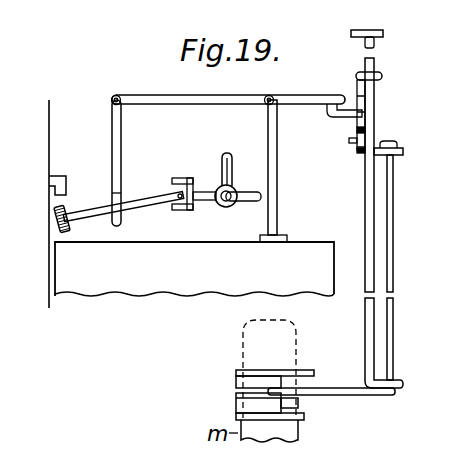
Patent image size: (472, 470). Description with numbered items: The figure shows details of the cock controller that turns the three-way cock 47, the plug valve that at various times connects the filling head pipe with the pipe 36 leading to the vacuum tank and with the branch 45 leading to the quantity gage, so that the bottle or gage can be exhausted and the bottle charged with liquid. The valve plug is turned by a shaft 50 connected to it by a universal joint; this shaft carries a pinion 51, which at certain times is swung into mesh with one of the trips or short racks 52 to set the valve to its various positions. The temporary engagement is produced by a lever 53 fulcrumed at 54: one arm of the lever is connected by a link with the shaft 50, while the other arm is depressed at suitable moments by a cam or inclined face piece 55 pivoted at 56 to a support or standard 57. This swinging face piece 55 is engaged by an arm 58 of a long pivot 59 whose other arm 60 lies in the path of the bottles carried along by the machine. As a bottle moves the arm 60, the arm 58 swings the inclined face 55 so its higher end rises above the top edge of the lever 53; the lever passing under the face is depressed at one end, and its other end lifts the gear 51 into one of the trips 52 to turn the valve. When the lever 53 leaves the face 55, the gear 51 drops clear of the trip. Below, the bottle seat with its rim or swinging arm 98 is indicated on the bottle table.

The pipe 36 is at (242, 164).
The branch 45 is at (248, 203).
The three-way cock 47 is at (208, 203).
The shaft 50 is at (93, 211).
The pinion 51 is at (57, 222).
The trip 52 is at (67, 181).
The lever 53 is at (229, 168).
The fulcrum 54 is at (272, 96).
The inclined face piece 55 is at (340, 117).
The pivot 56 is at (357, 75).
The standard 57 is at (365, 197).
The arm 58 is at (381, 142).
The long pivot 59 is at (393, 251).
The arm 60 is at (331, 404).
The swinging arm 98 is at (306, 373).